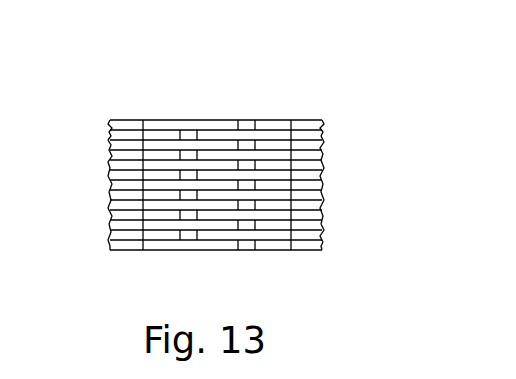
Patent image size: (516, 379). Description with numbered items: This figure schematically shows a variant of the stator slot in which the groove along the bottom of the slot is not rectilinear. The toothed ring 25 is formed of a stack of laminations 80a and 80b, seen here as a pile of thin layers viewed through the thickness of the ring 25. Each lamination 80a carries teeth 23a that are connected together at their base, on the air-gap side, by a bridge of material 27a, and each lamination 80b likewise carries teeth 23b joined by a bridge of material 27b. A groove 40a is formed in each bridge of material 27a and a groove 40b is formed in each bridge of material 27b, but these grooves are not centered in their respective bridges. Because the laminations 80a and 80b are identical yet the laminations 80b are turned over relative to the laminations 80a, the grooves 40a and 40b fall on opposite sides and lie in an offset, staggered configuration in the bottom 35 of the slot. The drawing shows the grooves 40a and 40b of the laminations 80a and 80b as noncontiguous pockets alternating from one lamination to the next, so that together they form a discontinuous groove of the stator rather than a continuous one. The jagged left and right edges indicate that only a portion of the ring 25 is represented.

The toothed ring 25 is at (313, 89).
The bridge of material 27a is at (113, 124).
The bridge of material 27b is at (112, 144).
The groove 40a is at (246, 126).
The groove 40b is at (186, 131).
The lamination 80a is at (322, 128).
The lamination 80b is at (322, 153).
The teeth 23a is at (322, 246).
The teeth 23b is at (322, 236).
The bottom of the slot 35 is at (158, 254).